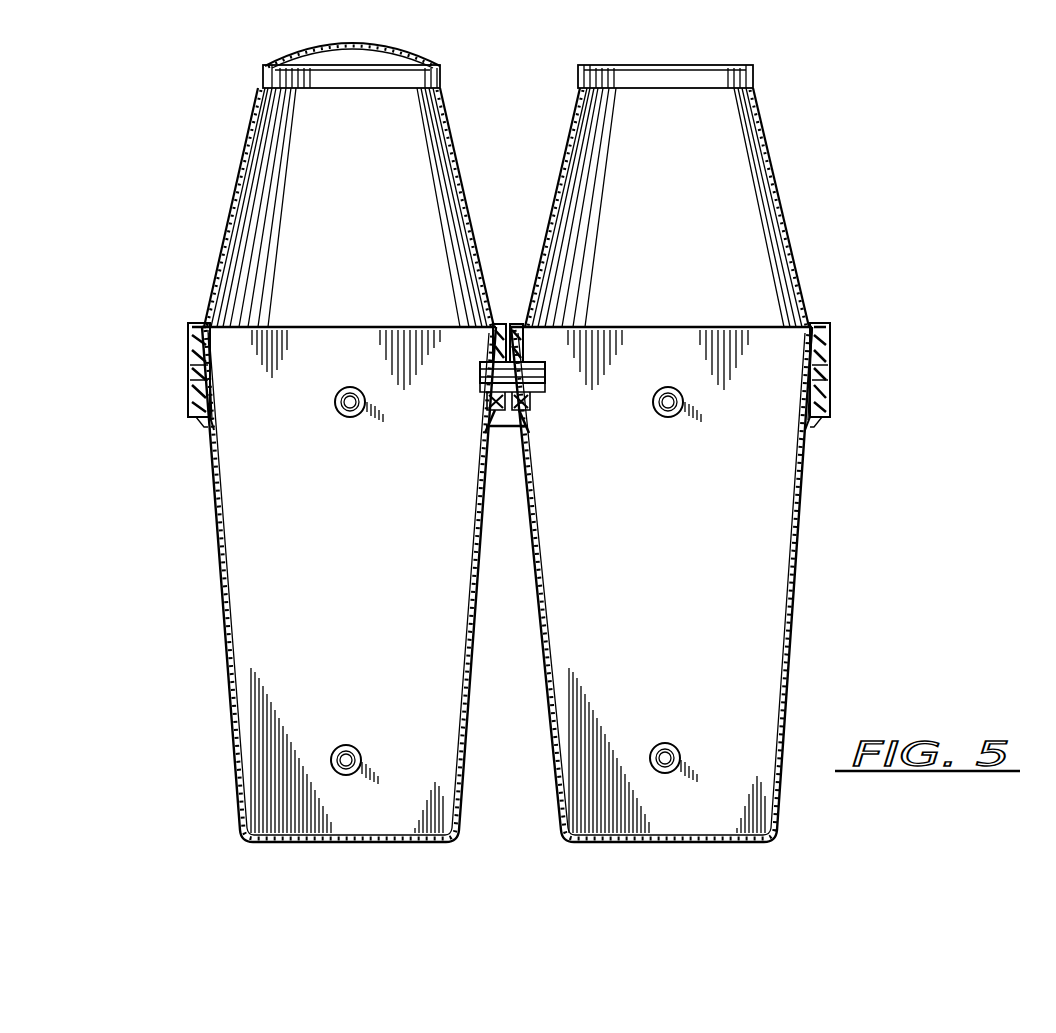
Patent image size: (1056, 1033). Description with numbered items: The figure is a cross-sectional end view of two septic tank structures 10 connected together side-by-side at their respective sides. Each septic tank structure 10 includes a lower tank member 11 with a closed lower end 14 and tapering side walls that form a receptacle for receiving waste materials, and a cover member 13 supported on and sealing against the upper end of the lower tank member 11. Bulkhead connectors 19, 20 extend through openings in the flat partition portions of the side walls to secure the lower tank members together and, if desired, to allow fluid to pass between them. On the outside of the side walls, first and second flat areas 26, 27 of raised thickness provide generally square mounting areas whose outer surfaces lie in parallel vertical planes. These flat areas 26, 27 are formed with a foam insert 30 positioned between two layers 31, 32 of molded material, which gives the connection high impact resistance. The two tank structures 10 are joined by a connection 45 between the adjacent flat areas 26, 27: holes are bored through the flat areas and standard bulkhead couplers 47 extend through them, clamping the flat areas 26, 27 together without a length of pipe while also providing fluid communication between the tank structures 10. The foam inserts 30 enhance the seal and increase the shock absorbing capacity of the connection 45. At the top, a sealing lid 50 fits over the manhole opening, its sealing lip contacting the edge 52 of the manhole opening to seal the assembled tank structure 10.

The septic tank structure 10 is at (205, 190).
The first lower tank member 11 is at (222, 592).
The cover member 13 is at (252, 130).
The closed lower end 14 is at (364, 846).
The bulkhead connector 19 is at (338, 413).
The bulkhead connector 20 is at (360, 746).
The first flat area 26 is at (190, 337).
The second flat area 27 is at (493, 325).
The foam insert 30 is at (198, 395).
The layer of molded material 31 is at (194, 370).
The layer of molded material 32 is at (214, 383).
The connection 45 is at (488, 408).
The bulkhead coupler 47 is at (478, 364).
The sealing lid 50 is at (395, 52).
The edge of the manhole opening 52 is at (756, 78).